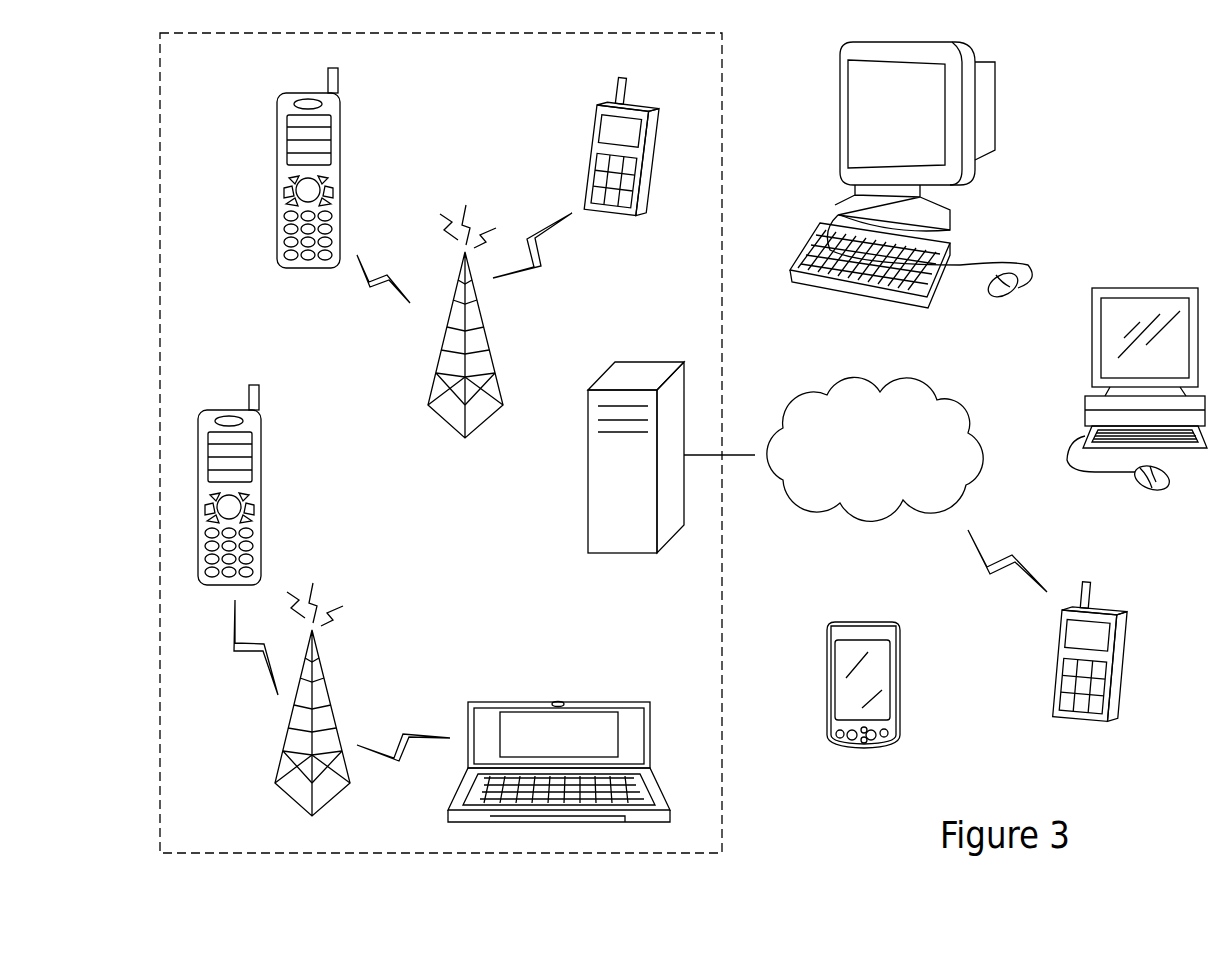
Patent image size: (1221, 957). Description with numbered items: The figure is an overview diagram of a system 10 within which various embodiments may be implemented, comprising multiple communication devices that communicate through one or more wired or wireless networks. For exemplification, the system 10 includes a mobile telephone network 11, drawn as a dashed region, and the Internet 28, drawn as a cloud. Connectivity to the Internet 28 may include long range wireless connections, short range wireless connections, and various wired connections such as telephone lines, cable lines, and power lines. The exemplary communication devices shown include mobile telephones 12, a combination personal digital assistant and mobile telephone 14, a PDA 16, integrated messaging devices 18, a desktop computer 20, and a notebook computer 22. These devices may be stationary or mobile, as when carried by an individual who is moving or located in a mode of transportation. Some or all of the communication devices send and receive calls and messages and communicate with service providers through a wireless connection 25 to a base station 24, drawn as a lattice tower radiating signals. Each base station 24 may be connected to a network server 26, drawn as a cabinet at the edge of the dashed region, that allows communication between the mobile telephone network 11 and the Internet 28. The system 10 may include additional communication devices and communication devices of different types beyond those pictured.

The system 10 is at (1190, 566).
The mobile telephone network 11 is at (204, 80).
The mobile telephone 12 is at (340, 181).
The combination personal digital assistant and mobile telephone 14 is at (560, 702).
The PDA 16 is at (900, 680).
The integrated messaging device 18 is at (590, 157).
The desktop computer 20 is at (995, 99).
The notebook computer 22 is at (1145, 285).
The base station 24 is at (485, 327).
The wireless connection 25 is at (253, 675).
The network server 26 is at (588, 474).
The Internet 28 is at (912, 380).